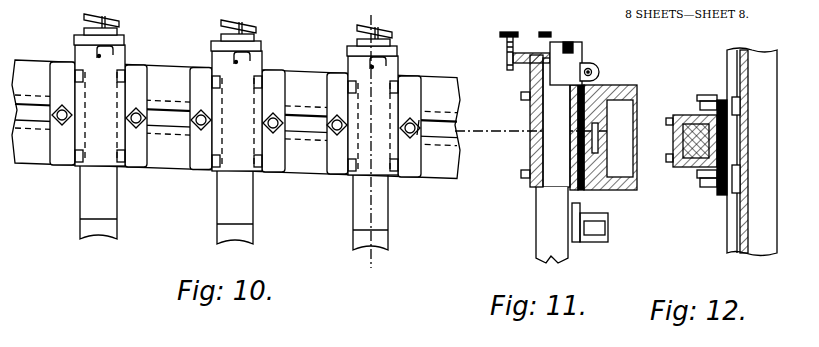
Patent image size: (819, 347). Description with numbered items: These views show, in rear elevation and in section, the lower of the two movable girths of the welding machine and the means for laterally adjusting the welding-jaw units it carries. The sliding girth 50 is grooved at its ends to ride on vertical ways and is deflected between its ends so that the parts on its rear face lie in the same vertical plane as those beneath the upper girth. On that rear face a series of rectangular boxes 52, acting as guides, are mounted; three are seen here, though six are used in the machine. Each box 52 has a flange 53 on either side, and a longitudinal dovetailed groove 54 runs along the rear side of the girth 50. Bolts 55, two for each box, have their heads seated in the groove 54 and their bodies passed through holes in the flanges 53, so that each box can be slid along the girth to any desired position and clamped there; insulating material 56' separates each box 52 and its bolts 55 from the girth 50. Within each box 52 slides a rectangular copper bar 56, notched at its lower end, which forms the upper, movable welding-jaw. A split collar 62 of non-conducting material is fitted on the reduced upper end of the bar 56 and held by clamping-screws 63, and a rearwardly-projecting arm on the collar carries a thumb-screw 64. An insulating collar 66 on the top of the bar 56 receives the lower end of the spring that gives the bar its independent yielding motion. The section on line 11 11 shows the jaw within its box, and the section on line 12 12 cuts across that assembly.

In FIG. 10, the sliding girth 50 is at (306, 80).
In FIG. 12, the sliding girth 50 is at (740, 253).
In FIG. 10, the section line 11 11 is at (389, 159).
In FIG. 11, the section line 12 12 is at (548, 134).
In FIG. 10, the box 52 is at (452, 178).
In FIG. 10, the flange 53 is at (417, 80).
In FIG. 11, the flange 53 is at (607, 137).
In FIG. 12, the flange 53 is at (691, 141).
In FIG. 10, the longitudinal dovetailed groove 54 is at (452, 132).
In FIG. 10, the bolt 55 is at (413, 136).
In FIG. 10, the copper bar 56 is at (234, 208).
In FIG. 11, the copper bar 56 is at (522, 160).
In FIG. 11, the insulating material 56' is at (611, 216).
In FIG. 12, the insulating material 56' is at (702, 173).
In FIG. 11, the split collar 62 is at (531, 64).
In FIG. 11, the clamping-screw 63 is at (594, 71).
In FIG. 11, the thumb-screw 64 is at (505, 38).
In FIG. 11, the collar of insulating material 66 is at (570, 54).